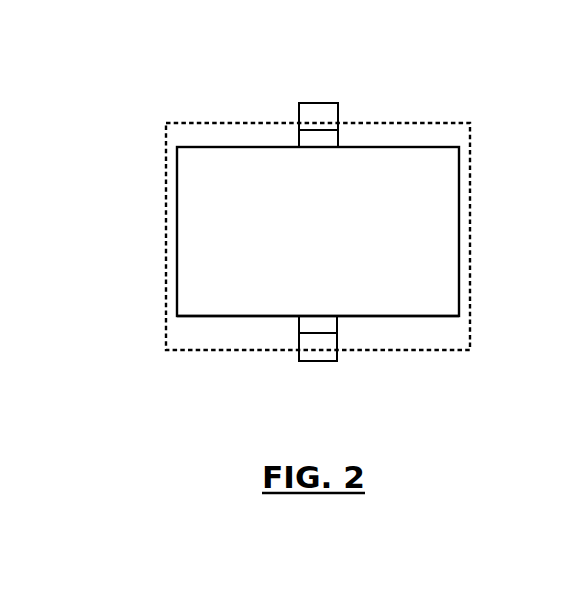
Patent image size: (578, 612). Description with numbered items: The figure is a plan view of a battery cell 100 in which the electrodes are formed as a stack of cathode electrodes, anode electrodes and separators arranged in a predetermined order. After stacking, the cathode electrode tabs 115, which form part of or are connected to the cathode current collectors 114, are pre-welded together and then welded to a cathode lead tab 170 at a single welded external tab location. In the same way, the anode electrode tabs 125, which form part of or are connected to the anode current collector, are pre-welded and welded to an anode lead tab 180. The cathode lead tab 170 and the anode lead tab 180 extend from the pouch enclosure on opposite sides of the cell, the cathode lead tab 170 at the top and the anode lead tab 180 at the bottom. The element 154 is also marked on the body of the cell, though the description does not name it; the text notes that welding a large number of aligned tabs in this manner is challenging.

The battery cell 100 is at (188, 131).
The cathode current collector 114 is at (459, 230).
The cathode electrode tab 115 is at (338, 138).
The anode electrode tab 125 is at (298, 328).
The bottom surface 154 is at (407, 316).
The cathode lead tab 170 is at (327, 103).
The anode lead tab 180 is at (330, 361).